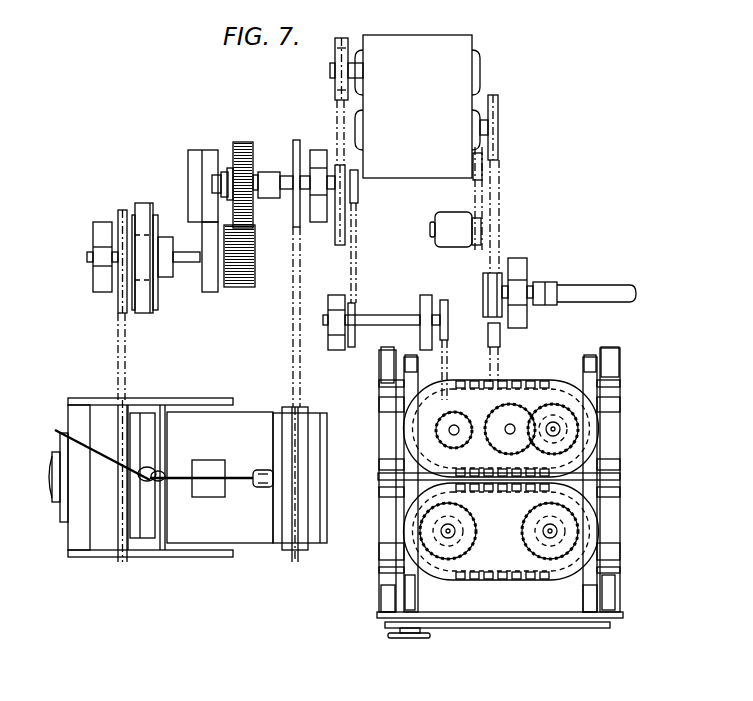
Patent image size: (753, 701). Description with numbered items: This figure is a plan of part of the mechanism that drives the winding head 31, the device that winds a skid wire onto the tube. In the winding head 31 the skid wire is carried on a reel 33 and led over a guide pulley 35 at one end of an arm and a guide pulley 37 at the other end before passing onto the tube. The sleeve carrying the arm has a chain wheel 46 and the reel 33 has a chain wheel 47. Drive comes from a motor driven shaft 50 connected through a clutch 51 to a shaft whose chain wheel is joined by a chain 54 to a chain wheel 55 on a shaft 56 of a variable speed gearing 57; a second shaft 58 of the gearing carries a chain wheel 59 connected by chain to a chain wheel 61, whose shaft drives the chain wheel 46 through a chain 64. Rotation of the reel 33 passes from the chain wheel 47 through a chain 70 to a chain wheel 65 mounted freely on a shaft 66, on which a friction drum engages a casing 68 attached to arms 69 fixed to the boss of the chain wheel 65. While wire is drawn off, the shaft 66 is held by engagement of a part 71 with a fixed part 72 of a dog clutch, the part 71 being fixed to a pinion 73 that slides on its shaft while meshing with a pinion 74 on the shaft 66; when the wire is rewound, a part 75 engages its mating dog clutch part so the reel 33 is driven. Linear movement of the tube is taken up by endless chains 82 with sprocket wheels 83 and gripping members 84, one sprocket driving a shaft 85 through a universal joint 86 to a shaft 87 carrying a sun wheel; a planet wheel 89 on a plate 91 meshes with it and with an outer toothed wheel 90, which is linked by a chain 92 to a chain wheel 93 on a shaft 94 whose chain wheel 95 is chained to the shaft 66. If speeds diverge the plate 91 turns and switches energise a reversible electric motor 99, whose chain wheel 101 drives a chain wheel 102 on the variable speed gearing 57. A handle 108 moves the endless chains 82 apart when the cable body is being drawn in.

The winding head 31 is at (252, 535).
The reel 33 is at (141, 540).
The guide pulley 35 is at (141, 483).
The guide pulley 37 is at (273, 478).
The chain wheel 46 is at (292, 556).
The chain wheel 47 is at (122, 563).
The motor driven shaft 50 is at (585, 290).
The clutch 51 is at (541, 283).
The chain 54 is at (497, 224).
The chain wheel 55 is at (498, 156).
The shaft 56 is at (492, 128).
The variable speed gearing 57 is at (428, 121).
The second shaft 58 is at (353, 66).
The chain wheel 59 is at (335, 56).
The chain wheel 61 is at (347, 222).
The chain 64 is at (292, 363).
The chain wheel 65 is at (120, 215).
The shaft 66 is at (185, 262).
The casing 68 is at (144, 314).
The arms 69 is at (130, 308).
The chain 70 is at (126, 365).
The part of dog clutch 71 is at (230, 166).
The part of dog clutch 72 is at (215, 186).
The pinion 73 is at (241, 142).
The pinion 74 is at (243, 288).
The part of dog clutch 75 is at (263, 175).
The endless chains 82 is at (500, 574).
The sprocket wheels 83 is at (562, 550).
The gripping members 84 is at (501, 428).
The shaft 85 is at (549, 393).
The universal joint 86 is at (512, 410).
The shaft 87 is at (489, 402).
The planet wheel 89 is at (381, 496).
The outer toothed wheel 90 is at (381, 450).
The plate 91 is at (381, 433).
The chain 92 is at (448, 363).
The chain wheel 93 is at (448, 312).
The shaft 94 is at (389, 319).
The chain wheel 95 is at (356, 305).
The geared reversible electric motor 99 is at (447, 240).
The chain wheel 101 is at (477, 245).
The chain wheel 102 is at (480, 173).
The handle 108 is at (408, 638).